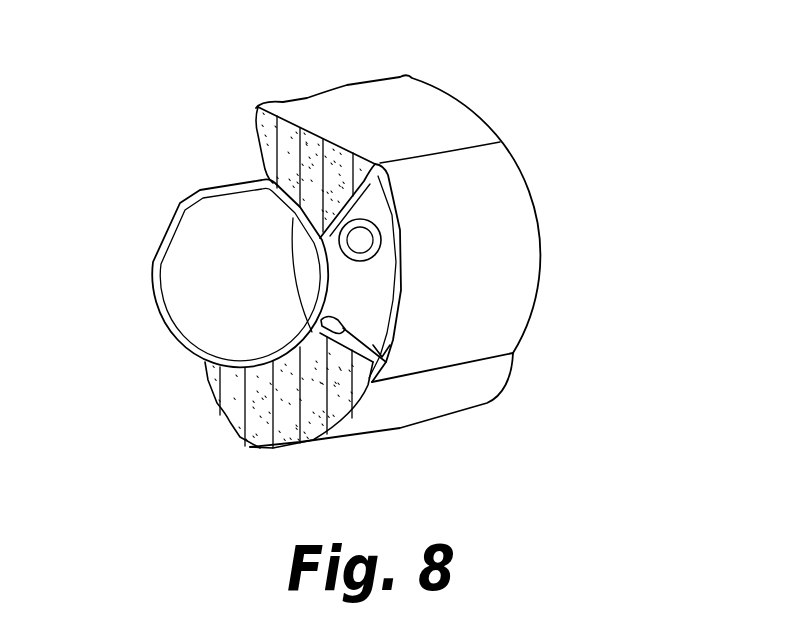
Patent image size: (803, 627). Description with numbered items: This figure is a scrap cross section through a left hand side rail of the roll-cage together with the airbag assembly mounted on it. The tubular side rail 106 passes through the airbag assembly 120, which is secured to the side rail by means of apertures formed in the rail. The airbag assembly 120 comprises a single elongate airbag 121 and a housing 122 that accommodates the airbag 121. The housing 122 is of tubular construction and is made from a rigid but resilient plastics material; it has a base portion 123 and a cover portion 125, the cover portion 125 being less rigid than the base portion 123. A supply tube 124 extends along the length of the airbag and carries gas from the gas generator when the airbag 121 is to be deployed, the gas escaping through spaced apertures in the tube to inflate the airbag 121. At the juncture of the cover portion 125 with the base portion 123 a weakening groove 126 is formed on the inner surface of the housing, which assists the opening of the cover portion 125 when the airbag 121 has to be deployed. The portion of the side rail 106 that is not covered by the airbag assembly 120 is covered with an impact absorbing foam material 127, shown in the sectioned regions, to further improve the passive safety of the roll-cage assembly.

The side rail 106 is at (158, 240).
The airbag assembly 120 is at (479, 186).
The airbag 121 is at (383, 277).
The housing 122 is at (237, 148).
The base portion 123 is at (322, 321).
The supply tube 124 is at (358, 217).
The cover portion 125 is at (527, 323).
The weakening groove 126 is at (388, 347).
The impact absorbing foam material 127 is at (283, 100).